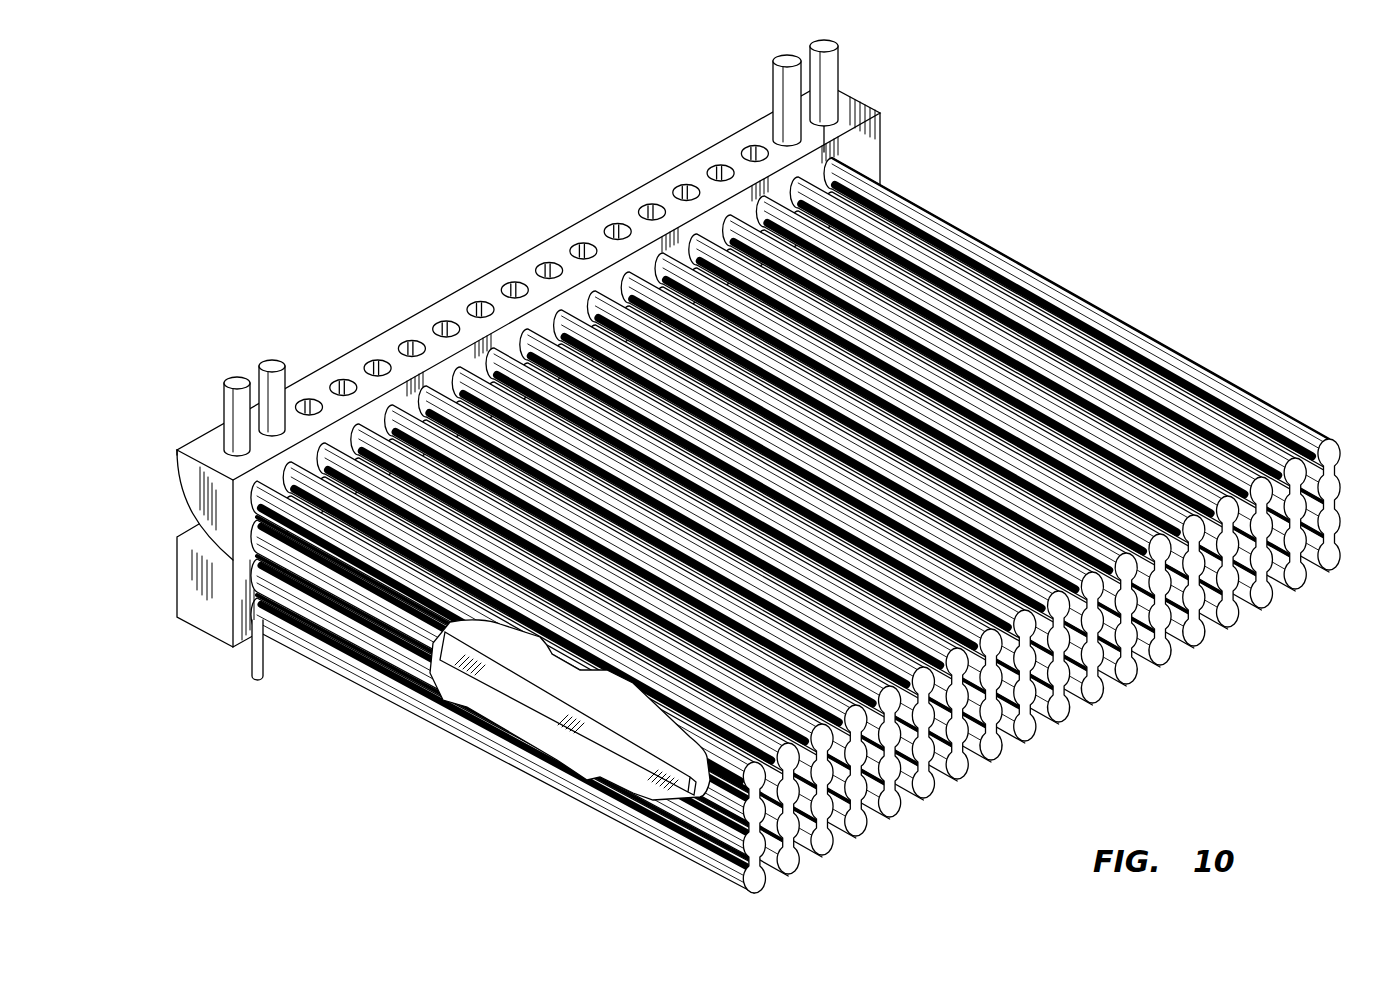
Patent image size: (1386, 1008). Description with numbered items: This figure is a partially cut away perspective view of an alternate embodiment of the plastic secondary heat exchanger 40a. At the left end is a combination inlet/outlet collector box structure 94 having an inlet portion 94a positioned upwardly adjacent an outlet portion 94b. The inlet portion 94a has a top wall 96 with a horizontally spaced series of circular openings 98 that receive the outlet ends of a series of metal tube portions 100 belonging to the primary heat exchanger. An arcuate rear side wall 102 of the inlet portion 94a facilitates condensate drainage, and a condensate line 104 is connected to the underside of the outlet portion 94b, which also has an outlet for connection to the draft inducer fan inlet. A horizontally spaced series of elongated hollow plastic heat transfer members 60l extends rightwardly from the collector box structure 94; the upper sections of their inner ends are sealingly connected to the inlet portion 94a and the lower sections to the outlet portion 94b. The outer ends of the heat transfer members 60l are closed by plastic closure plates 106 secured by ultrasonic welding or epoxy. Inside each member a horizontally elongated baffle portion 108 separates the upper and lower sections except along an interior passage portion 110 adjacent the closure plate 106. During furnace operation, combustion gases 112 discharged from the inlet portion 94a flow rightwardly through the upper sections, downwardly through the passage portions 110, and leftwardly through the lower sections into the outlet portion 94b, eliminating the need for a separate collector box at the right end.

The plastic secondary heat exchanger 40a is at (725, 475).
The hollow plastic heat transfer members 60l is at (812, 534).
The combination inlet/outlet collector box structure 94 is at (478, 365).
The inlet portion 94a is at (200, 484).
The outlet portion 94b is at (192, 587).
The top wall 96 is at (543, 253).
The circular openings 98 is at (690, 182).
The metal tube portions 100 is at (268, 388).
The arcuate rear side wall 102 is at (176, 458).
The condensate line 104 is at (248, 660).
The plastic closure plates 106 is at (1298, 582).
The baffle portion 108 is at (566, 731).
The interior passage portion 110 is at (697, 803).
The combustion gases 112 is at (630, 790).